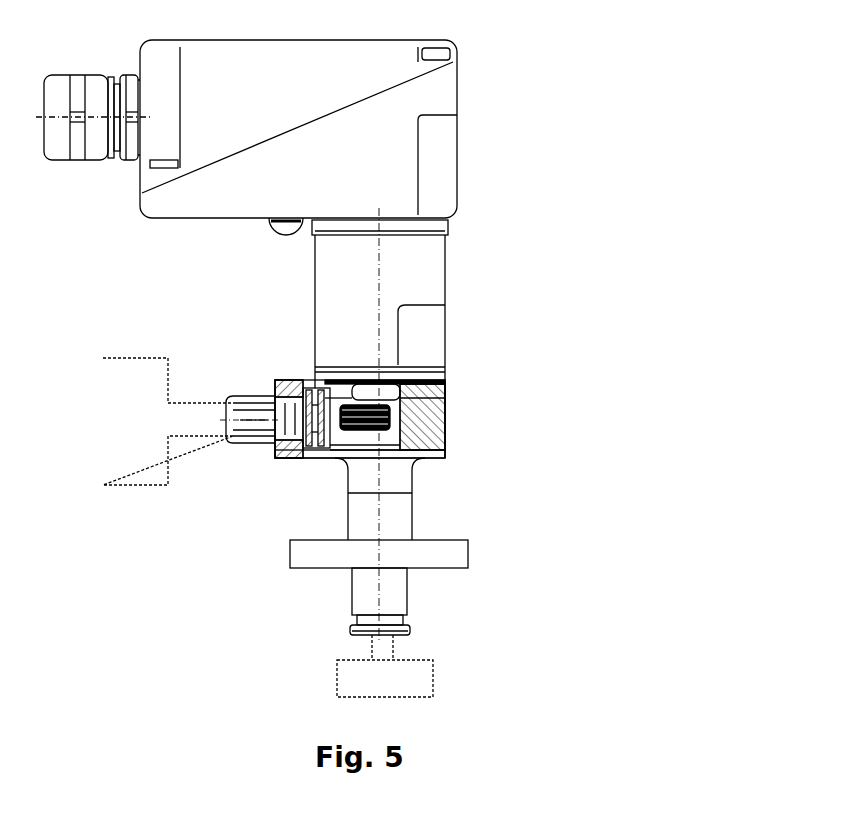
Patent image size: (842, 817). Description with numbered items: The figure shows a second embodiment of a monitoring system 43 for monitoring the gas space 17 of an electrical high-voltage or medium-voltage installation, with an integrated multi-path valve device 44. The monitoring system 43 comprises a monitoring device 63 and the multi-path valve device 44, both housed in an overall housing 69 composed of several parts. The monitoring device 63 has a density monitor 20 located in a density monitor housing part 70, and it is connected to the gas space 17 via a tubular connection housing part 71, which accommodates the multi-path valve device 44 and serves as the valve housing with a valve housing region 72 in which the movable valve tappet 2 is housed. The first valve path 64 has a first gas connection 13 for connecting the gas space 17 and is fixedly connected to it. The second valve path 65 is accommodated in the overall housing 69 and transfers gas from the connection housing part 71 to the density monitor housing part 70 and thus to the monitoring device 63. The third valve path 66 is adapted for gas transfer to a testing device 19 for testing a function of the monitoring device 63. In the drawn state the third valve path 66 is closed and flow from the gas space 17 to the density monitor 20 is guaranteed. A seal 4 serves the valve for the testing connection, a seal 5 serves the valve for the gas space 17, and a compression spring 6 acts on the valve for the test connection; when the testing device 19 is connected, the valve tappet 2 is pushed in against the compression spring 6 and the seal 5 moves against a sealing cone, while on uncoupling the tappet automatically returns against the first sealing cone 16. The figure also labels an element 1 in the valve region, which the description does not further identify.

The pressure sensor 1 is at (445, 445).
The valve tappet 2 is at (255, 396).
The seal 4 is at (285, 460).
The seal 5 is at (312, 460).
The compression spring 6 is at (448, 398).
The first gas connection 13 is at (390, 605).
The first sealing cone 16 is at (298, 380).
The gas space 17 is at (408, 686).
The testing device 19 is at (145, 441).
The density monitor 20 is at (358, 155).
The monitoring system 43 is at (562, 54).
The multi-path valve device 44 is at (447, 425).
The monitoring device 63 is at (393, 118).
The first valve path 64 is at (422, 458).
The second valve path 65 is at (355, 393).
The third valve path 66 is at (230, 398).
The overall housing 69 is at (560, 268).
The density monitor housing part 70 is at (302, 68).
The connection housing part 71 is at (470, 281).
The valve housing region 72 is at (478, 383).